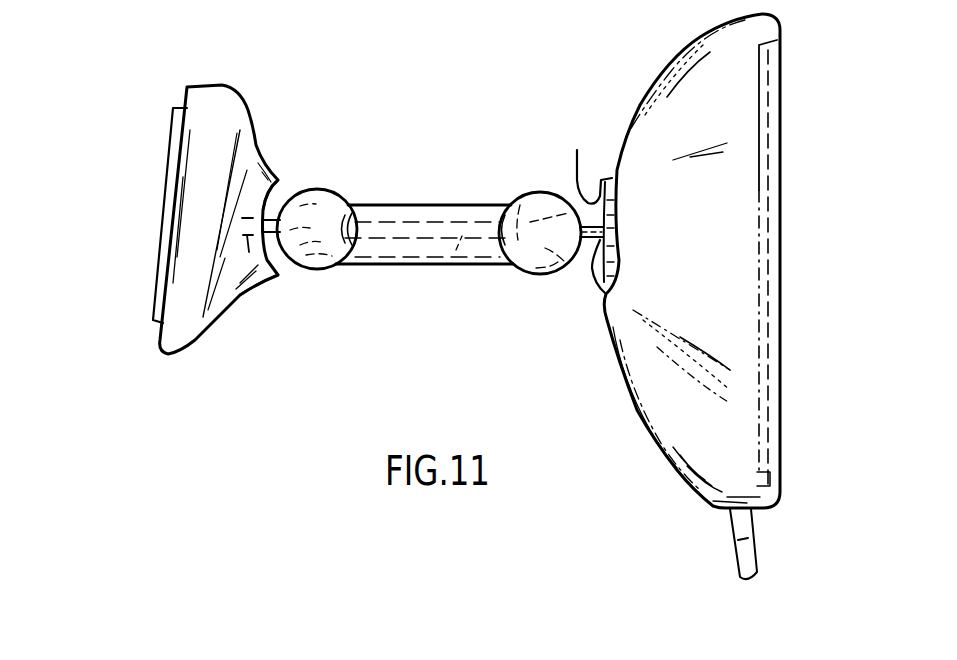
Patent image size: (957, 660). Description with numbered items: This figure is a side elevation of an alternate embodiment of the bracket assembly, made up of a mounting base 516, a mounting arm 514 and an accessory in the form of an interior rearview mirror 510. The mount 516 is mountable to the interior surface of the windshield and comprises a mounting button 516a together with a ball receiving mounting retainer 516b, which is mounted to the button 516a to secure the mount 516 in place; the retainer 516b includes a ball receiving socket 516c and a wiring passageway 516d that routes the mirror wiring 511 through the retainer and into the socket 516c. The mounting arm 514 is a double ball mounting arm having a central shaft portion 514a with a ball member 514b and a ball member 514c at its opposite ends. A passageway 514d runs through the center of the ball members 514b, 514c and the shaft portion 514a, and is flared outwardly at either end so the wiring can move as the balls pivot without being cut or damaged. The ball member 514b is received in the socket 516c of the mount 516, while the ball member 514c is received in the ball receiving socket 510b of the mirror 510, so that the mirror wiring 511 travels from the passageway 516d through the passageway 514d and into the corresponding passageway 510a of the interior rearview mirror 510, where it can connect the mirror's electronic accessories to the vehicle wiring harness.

The interior rearview mirror 510 is at (670, 56).
The passageway 510a is at (622, 264).
The ball receiving socket 510b is at (577, 150).
The mirror wiring 511 is at (282, 190).
The mounting arm 514 is at (428, 204).
The central shaft portion 514a is at (410, 265).
The ball member 514b is at (317, 271).
The ball member 514c is at (550, 192).
The passageway 514d is at (456, 250).
The mounting base 516 is at (212, 100).
The mounting button 516a is at (178, 163).
The ball receiving mounting retainer 516b is at (265, 275).
The ball receiving socket 516c is at (281, 190).
The wiring passageway 516d is at (264, 285).